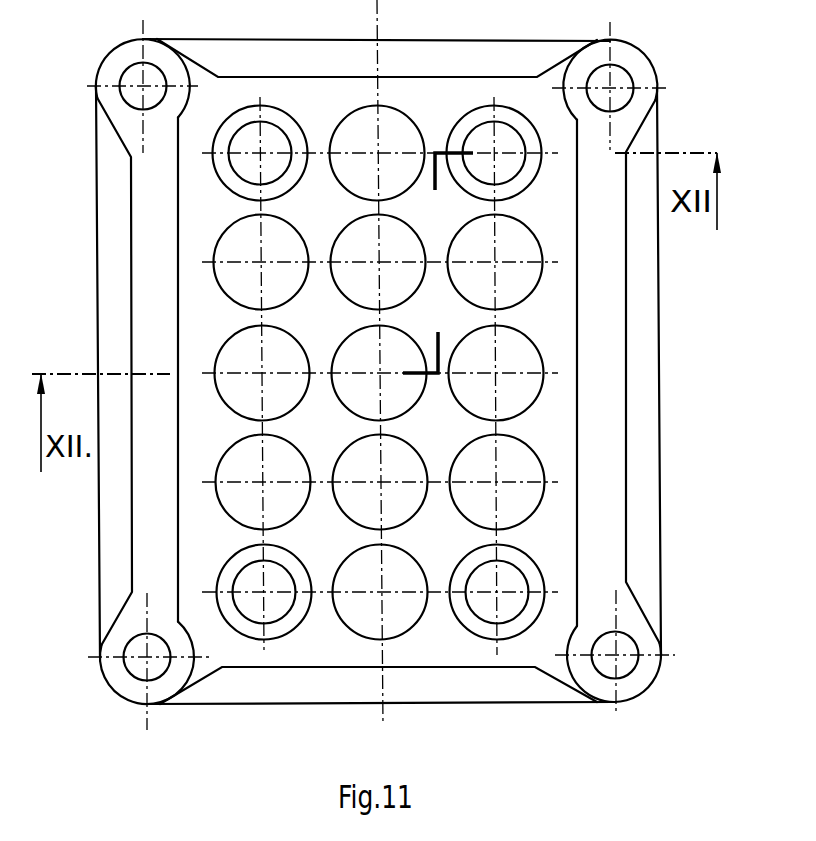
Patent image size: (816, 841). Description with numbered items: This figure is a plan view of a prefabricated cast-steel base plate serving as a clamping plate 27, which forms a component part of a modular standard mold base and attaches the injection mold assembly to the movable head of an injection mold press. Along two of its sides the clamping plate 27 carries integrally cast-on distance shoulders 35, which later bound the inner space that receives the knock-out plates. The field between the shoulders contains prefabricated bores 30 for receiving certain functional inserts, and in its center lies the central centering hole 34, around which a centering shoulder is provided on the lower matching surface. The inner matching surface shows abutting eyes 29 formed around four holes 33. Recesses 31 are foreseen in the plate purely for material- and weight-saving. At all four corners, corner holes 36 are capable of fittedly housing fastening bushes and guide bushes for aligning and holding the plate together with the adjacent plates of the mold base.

The clamping plate 27 is at (668, 370).
The abutting eyes 29 is at (247, 117).
The prefabricated bores 30 is at (230, 398).
The recesses 31 is at (107, 181).
The holes 33 is at (495, 610).
The central centering hole 34 is at (355, 353).
The cast-on distance shoulders 35 is at (612, 305).
The corner holes 36 is at (625, 645).